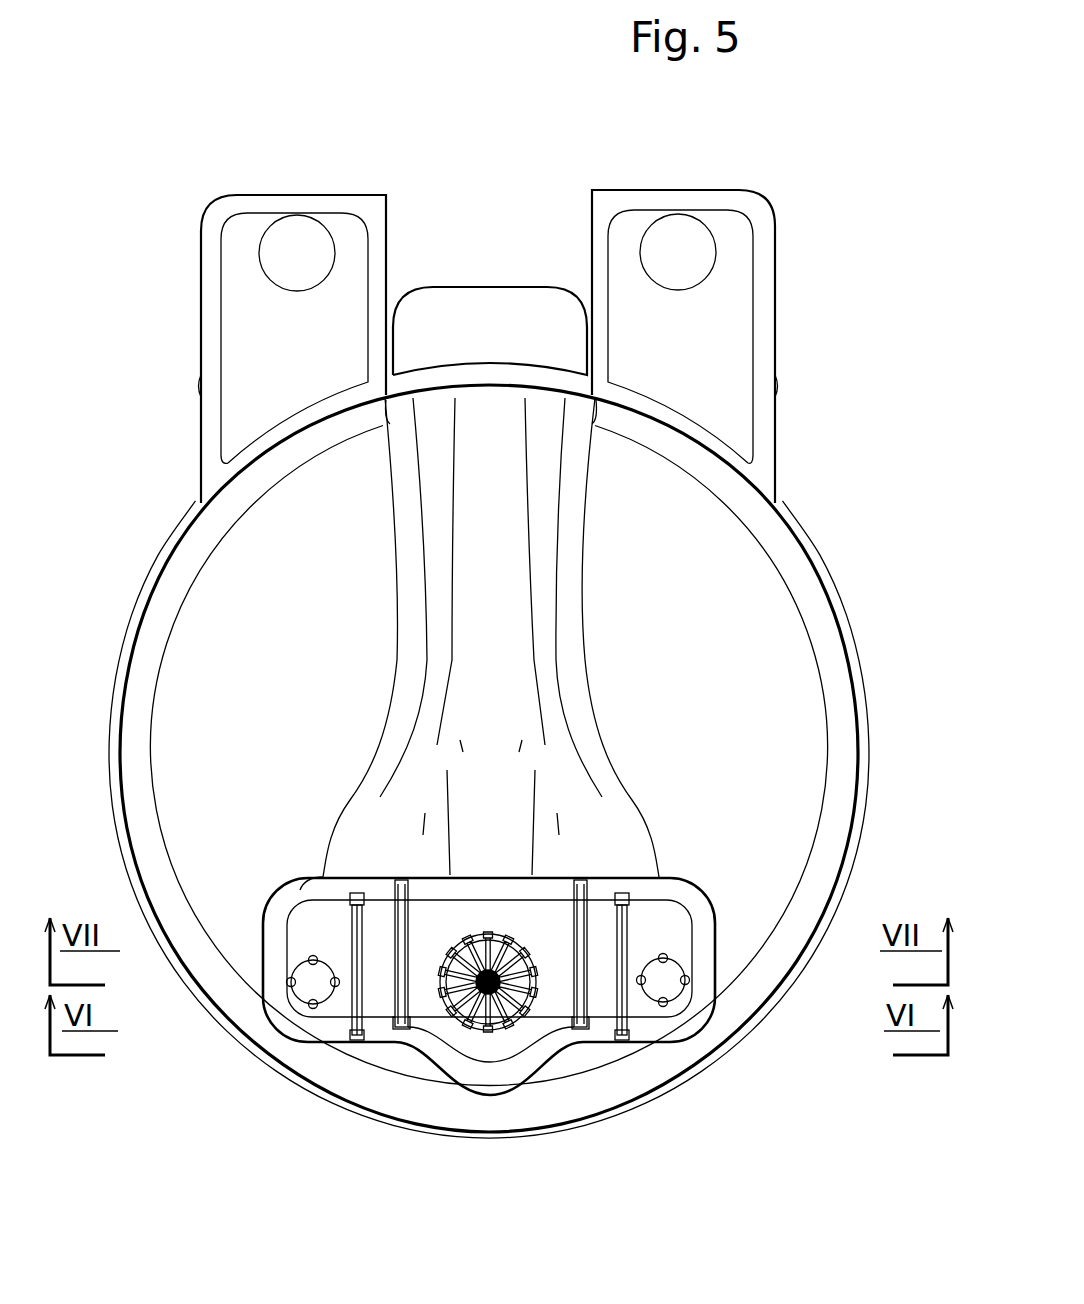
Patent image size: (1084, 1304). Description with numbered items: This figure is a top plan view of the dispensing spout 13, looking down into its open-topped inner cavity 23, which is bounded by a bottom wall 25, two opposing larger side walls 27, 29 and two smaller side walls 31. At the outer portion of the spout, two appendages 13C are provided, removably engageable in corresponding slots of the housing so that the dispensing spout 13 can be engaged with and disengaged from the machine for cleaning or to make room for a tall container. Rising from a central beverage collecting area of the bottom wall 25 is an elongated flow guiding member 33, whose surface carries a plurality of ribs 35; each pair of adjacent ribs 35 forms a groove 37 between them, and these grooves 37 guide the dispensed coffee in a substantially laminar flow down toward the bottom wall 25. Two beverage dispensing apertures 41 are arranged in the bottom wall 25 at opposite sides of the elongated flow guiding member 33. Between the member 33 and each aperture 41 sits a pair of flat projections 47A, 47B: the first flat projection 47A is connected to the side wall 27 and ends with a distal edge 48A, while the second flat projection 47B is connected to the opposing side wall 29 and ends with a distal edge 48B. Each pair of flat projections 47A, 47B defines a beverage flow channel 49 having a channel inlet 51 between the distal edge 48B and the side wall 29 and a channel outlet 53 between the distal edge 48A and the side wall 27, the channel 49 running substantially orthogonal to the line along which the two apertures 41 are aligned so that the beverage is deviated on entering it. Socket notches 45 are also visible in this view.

The dispensing spout 13 is at (873, 603).
The appendages 13C is at (230, 305).
The inner cavity 23 is at (478, 908).
The bottom wall 25 is at (505, 915).
The larger side wall 27 is at (455, 888).
The larger side wall 29 is at (455, 1064).
The smaller side walls 31 is at (268, 946).
The elongated flow guiding member 33 is at (485, 1044).
The ribs 35 is at (518, 958).
The groove 37 is at (498, 1034).
The beverage dispensing apertures 41 is at (300, 1005).
The socket notches 45 is at (313, 1008).
The flat projection 47A is at (488, 1032).
The flat projection 47B is at (481, 992).
The distal edge 48A is at (356, 893).
The distal edge 48B is at (402, 1032).
The beverage flow channel 49 is at (392, 979).
The channel inlet 51 is at (358, 1042).
The channel outlet 53 is at (475, 994).